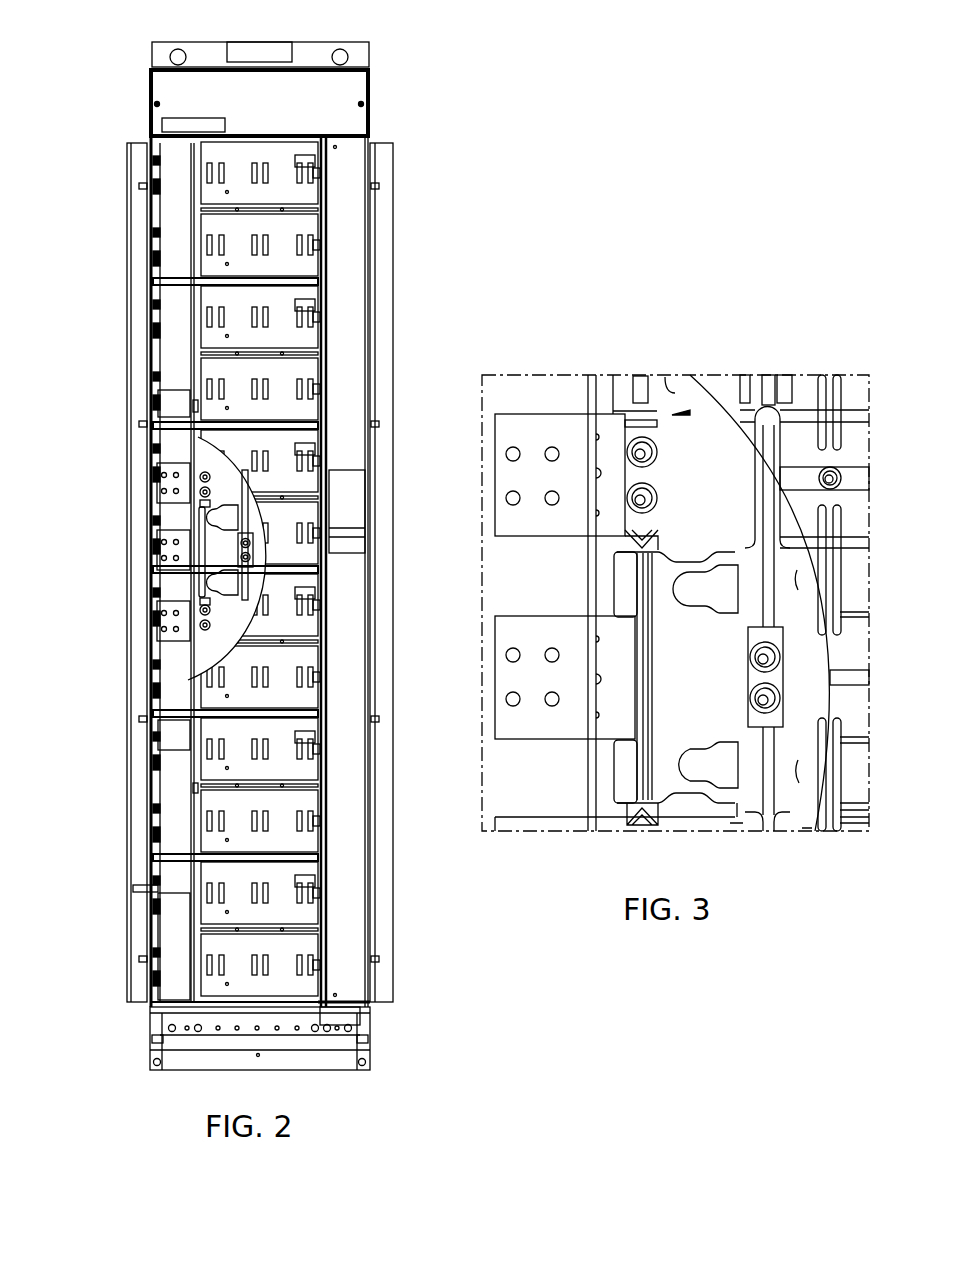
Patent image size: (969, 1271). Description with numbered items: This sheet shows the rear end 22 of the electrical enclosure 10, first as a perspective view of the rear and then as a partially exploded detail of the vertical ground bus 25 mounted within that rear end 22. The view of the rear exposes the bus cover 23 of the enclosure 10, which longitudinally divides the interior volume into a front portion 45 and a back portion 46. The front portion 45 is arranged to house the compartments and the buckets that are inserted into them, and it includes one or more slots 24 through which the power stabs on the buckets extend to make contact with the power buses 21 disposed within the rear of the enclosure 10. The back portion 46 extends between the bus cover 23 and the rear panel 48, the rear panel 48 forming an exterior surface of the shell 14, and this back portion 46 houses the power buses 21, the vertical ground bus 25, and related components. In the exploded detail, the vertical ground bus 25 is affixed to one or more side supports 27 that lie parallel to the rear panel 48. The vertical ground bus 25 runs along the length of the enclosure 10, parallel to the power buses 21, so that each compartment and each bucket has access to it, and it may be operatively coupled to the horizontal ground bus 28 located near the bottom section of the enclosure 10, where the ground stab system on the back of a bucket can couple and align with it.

In FIG. 2, the electrical enclosure 10 is at (413, 40).
In FIG. 2, the shell 14 is at (150, 104).
In FIG. 2, the rear end 22 is at (287, 150).
In FIG. 2, the rear panel 48 is at (193, 452).
In FIG. 3, the rear panel 48 is at (540, 387).
In FIG. 2, the back portion 46 is at (240, 483).
In FIG. 2, the front portion 45 is at (272, 517).
In FIG. 2, the bus cover 23 is at (267, 548).
In FIG. 3, the bus cover 23 is at (729, 392).
In FIG. 2, the power buses 21 is at (247, 606).
In FIG. 3, the power buses 21 is at (652, 565).
In FIG. 2, the vertical ground bus 25 is at (192, 767).
In FIG. 3, the vertical ground bus 25 is at (590, 792).
In FIG. 2, the slots 24 is at (268, 682).
In FIG. 2, the horizontal ground bus 28 is at (212, 1030).
In FIG. 3, the side supports 27 is at (513, 540).